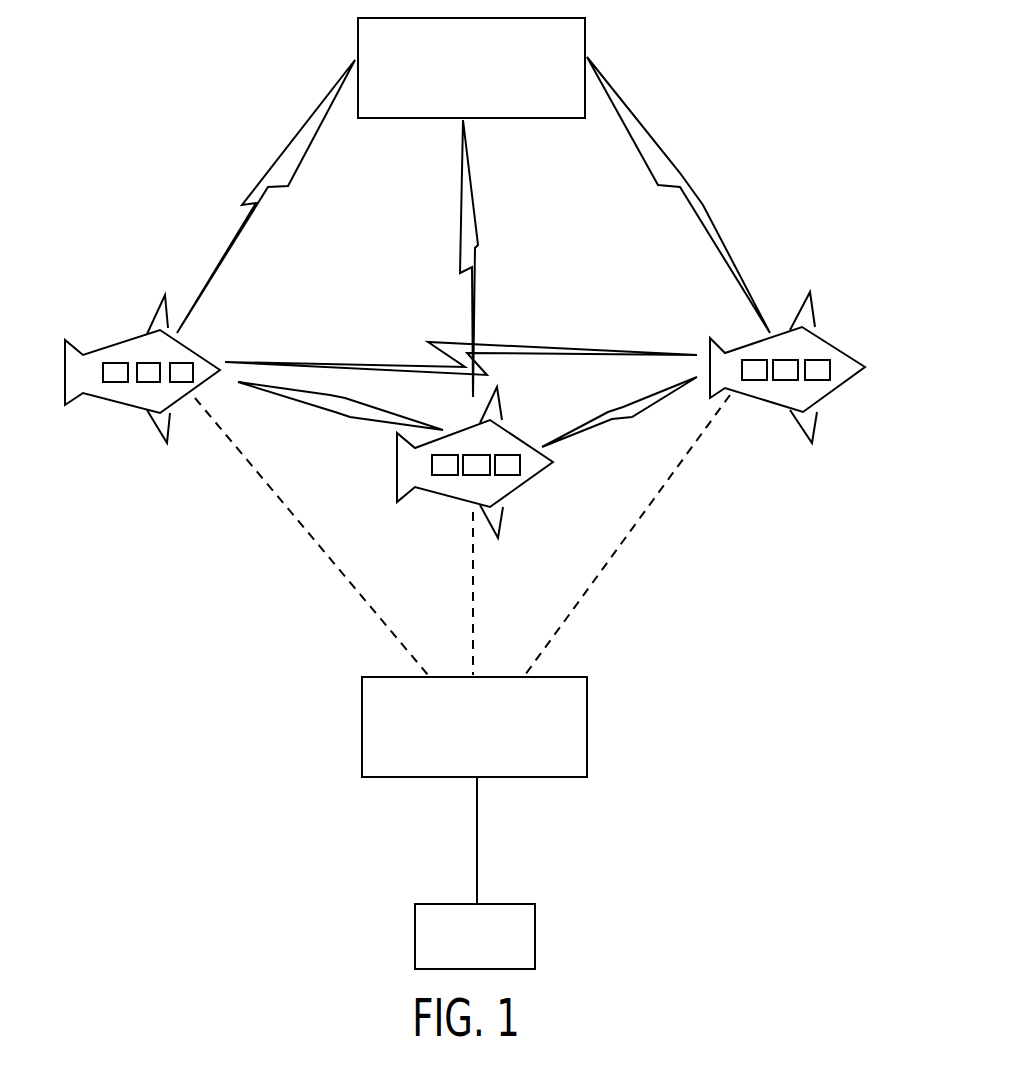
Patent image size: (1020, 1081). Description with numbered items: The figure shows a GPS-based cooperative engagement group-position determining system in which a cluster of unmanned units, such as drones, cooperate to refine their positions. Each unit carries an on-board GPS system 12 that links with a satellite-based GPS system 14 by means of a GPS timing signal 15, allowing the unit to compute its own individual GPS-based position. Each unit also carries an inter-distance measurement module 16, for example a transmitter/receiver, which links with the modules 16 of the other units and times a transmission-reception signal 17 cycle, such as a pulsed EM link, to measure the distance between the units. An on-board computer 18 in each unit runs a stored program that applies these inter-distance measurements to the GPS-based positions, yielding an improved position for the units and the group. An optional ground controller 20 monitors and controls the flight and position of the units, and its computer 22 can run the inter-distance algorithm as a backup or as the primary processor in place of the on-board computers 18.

The on-board GPS system 12 is at (183, 382).
The satellite-based GPS system 14 is at (585, 33).
The GPS timing signal 15 is at (293, 157).
The inter-distance measurement module 16 is at (148, 363).
The transmission-reception signal 17 is at (372, 363).
The on-board computer 18 is at (113, 382).
The ground controller 20 is at (587, 728).
The computer 22 is at (475, 936).